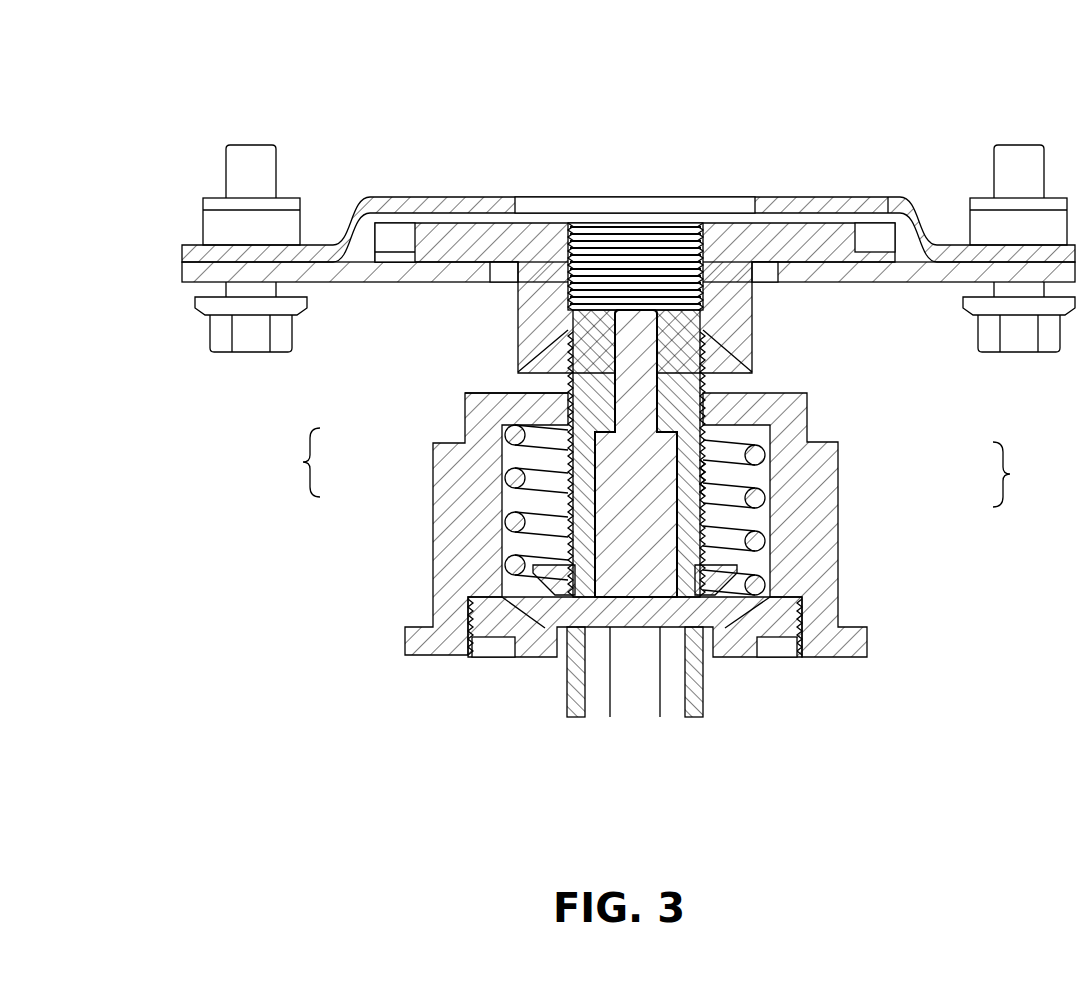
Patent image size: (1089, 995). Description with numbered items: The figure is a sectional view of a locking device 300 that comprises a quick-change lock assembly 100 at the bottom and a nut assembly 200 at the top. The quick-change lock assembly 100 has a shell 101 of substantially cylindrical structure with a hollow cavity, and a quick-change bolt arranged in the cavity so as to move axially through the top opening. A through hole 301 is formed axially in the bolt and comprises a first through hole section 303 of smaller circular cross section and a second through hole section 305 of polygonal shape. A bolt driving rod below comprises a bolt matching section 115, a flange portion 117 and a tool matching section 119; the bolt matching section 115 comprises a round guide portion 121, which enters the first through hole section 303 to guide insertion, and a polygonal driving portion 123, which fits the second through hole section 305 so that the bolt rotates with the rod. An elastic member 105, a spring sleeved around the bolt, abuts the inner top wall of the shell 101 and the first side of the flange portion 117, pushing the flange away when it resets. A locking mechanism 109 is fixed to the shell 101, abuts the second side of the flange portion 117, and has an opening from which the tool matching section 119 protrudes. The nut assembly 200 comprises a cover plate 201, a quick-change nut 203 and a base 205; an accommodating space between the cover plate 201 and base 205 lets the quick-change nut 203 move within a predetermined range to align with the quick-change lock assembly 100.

The quick-change lock assembly 100 is at (600, 763).
The shell 101 is at (465, 527).
The elastic member 105 is at (752, 542).
The locking mechanism 109 is at (736, 645).
The bolt matching section 115 is at (303, 462).
The flange portion 117 is at (543, 632).
The tool matching section 119 is at (690, 690).
The guide portion 121 is at (566, 391).
The driving portion 123 is at (620, 470).
The nut assembly 200 is at (575, 168).
The cover plate 201 is at (400, 208).
The quick-change nut 203 is at (452, 237).
The base 205 is at (832, 267).
The locking device 300 is at (196, 50).
The through hole 301 is at (1010, 474).
The first through hole section 303 is at (712, 378).
The second through hole section 305 is at (690, 490).